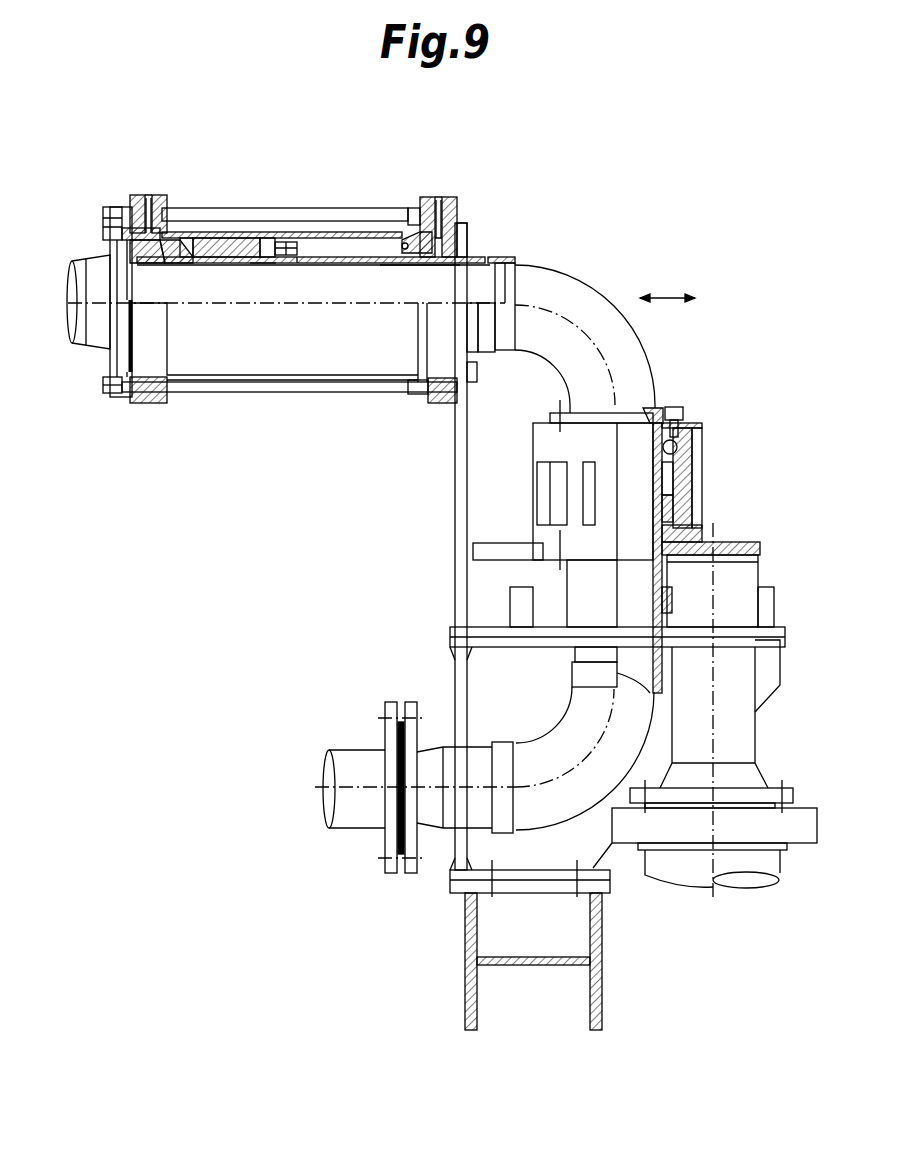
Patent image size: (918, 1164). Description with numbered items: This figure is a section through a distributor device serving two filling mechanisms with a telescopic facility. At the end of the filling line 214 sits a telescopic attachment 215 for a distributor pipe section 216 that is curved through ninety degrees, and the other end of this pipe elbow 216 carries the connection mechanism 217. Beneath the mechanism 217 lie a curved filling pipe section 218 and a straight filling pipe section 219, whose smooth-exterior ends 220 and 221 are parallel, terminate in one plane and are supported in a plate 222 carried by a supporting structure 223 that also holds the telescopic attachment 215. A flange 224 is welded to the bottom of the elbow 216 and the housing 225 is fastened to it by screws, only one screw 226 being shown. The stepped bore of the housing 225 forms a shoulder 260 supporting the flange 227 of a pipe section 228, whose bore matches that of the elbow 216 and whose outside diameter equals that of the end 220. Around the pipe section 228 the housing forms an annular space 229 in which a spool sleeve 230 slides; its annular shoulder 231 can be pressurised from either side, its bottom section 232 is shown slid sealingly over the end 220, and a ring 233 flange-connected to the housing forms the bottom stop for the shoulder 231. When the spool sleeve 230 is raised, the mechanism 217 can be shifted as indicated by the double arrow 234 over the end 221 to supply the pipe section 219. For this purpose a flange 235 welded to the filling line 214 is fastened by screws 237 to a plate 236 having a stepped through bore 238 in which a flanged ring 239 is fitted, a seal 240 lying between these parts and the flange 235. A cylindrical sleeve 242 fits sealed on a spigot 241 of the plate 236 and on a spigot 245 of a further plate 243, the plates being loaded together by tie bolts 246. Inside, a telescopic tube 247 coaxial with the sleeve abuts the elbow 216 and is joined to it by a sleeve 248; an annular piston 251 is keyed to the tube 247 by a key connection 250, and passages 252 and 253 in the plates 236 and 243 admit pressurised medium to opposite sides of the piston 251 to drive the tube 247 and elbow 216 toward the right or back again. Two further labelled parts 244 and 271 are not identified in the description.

The filling line 214 is at (84, 266).
The telescopic attachment 215 is at (318, 400).
The distributor pipe section 216 is at (570, 376).
The connection mechanism 217 is at (527, 458).
The filling pipe section 218 is at (550, 730).
The filling pipe section 219 is at (748, 736).
The end of pipe section 220 is at (585, 620).
The end of pipe section 221 is at (760, 580).
The plate 222 is at (455, 632).
The supporting structure 223 is at (460, 673).
The flange 224 is at (692, 422).
The housing 225 is at (704, 476).
The screw 226 is at (679, 406).
The flange 227 is at (654, 428).
The pipe section 228 is at (662, 478).
The annular space 229 is at (690, 490).
The spool sleeve 230 is at (664, 512).
The annular shoulder 231 is at (684, 535).
The bottom section 232 is at (668, 600).
The ring 233 is at (756, 545).
The double arrow 234 is at (672, 298).
The flange 235 is at (120, 360).
The plate 236 is at (162, 210).
The screws 237 is at (106, 214).
The stepped through bore 238 is at (150, 264).
The ring 239 is at (186, 266).
The seal 240 is at (150, 358).
The spigot 241 is at (202, 237).
The cylindrical sleeve 242 is at (233, 234).
The plate 243 is at (460, 212).
The wall portion 244 is at (417, 266).
The spigot 245 is at (410, 242).
The tie bolts 246 is at (326, 221).
The telescopic tube 247 is at (350, 264).
The sleeve 248 is at (506, 256).
The key connection 250 is at (299, 264).
The annular piston 251 is at (278, 241).
The passage 252 is at (147, 194).
The passage 253 is at (440, 197).
The shoulder 260 is at (677, 449).
The seal 271 is at (263, 266).